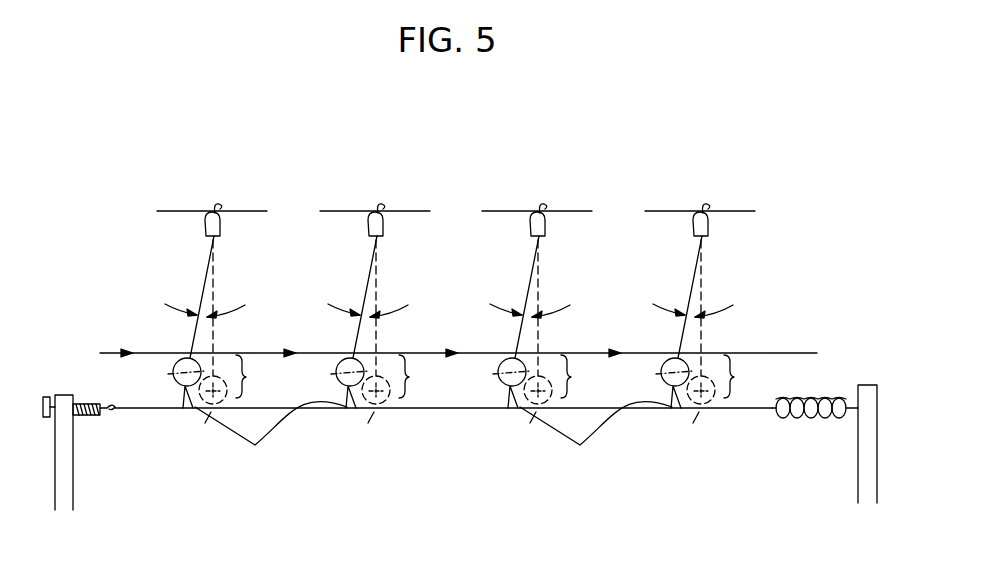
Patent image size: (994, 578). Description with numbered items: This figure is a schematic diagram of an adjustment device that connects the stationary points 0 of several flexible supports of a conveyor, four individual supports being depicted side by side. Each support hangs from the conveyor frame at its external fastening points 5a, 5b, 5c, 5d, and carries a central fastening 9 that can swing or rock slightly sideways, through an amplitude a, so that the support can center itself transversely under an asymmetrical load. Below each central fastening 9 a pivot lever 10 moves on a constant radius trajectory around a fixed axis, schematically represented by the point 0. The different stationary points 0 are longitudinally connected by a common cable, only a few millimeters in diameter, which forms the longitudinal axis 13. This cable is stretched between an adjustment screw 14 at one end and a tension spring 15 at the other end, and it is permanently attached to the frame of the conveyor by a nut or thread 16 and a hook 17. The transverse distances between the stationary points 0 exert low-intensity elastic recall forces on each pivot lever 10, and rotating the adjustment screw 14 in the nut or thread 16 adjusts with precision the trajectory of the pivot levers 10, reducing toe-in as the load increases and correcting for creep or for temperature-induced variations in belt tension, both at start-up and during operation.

The external fastening point 5a is at (212, 282).
The external fastening point 5b is at (375, 282).
The external fastening point 5c is at (537, 282).
The external fastening point 5d is at (700, 282).
The swing amplitude a is at (457, 296).
The central fastening 9 is at (497, 376).
The stationary point 0 is at (425, 417).
The pivot lever 10 is at (433, 439).
The longitudinal axis 13 is at (720, 412).
The adjustment screw 14 is at (80, 402).
The tension spring 15 is at (808, 422).
The nut or thread 16 is at (43, 393).
The hook 17 is at (63, 450).